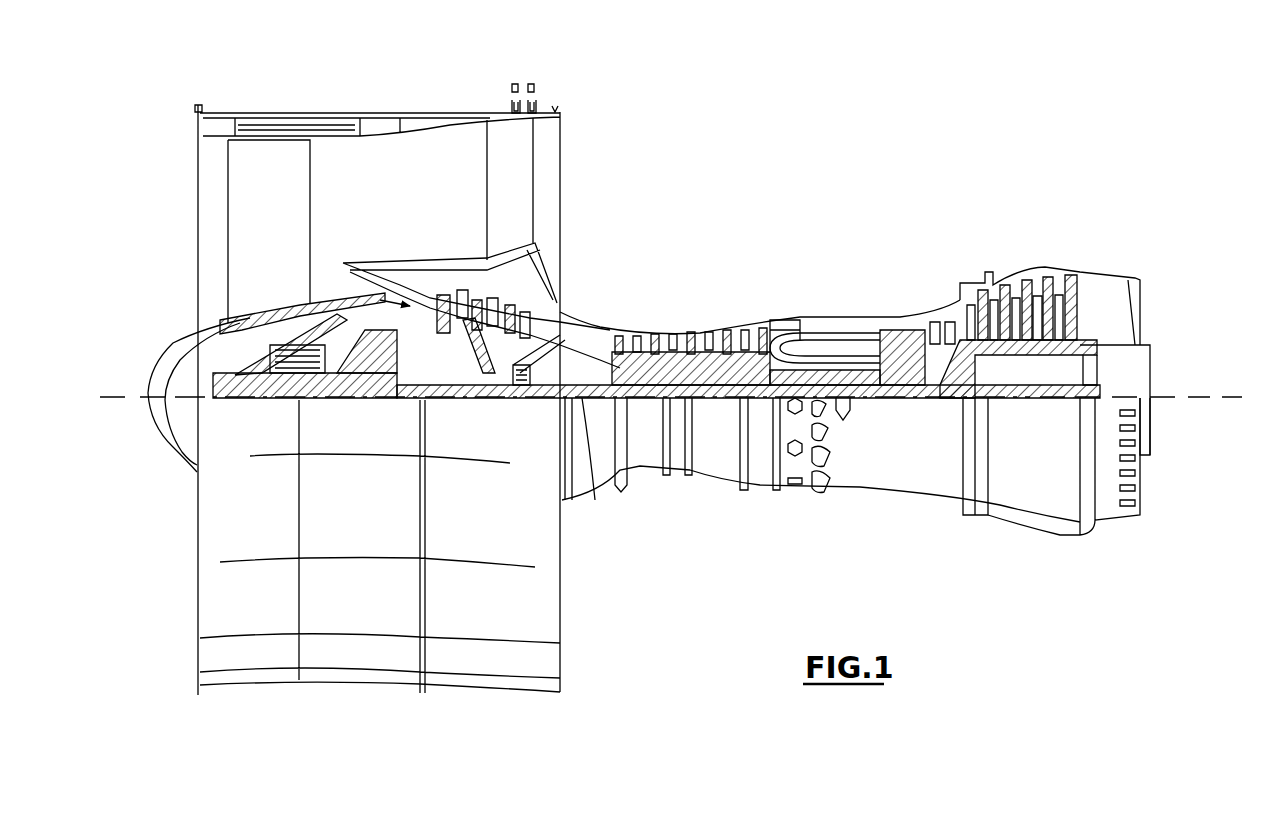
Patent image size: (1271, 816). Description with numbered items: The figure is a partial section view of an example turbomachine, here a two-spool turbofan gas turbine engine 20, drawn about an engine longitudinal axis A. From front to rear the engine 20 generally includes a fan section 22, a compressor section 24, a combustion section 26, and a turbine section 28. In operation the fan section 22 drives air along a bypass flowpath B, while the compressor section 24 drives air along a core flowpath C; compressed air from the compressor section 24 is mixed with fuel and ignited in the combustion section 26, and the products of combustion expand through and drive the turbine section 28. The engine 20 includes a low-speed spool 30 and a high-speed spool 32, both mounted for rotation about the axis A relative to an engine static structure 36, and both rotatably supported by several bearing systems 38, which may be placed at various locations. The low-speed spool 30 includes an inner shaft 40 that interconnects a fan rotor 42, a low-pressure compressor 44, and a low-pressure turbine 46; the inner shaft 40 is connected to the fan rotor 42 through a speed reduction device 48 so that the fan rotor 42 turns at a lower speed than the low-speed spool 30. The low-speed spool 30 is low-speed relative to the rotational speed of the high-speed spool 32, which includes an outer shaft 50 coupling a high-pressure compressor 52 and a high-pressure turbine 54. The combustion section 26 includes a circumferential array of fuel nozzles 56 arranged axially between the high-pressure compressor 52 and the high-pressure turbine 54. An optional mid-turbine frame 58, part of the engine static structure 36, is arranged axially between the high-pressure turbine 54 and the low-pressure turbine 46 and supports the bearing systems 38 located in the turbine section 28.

The gas turbine engine 20 is at (842, 165).
The fan section 22 is at (308, 103).
The compressor section 24 is at (612, 305).
The combustion section 26 is at (836, 295).
The turbine section 28 is at (985, 258).
The low-speed spool 30 is at (676, 440).
The high-speed spool 32 is at (765, 345).
The engine static structure 36 is at (857, 460).
The bearing systems 38 is at (520, 380).
The inner shaft 40 is at (588, 470).
The fan rotor 42 is at (240, 323).
The low-pressure compressor 44 is at (490, 265).
The low-pressure turbine 46 is at (1028, 290).
The speed reduction device 48 is at (385, 380).
The outer shaft 50 is at (843, 400).
The high-pressure compressor 52 is at (688, 350).
The high-pressure turbine 54 is at (895, 405).
The fuel nozzles 56 is at (838, 340).
The mid-turbine frame 58 is at (930, 330).
The engine longitudinal axis A is at (1228, 397).
The bypass flowpath B is at (445, 188).
The core flowpath C is at (350, 290).